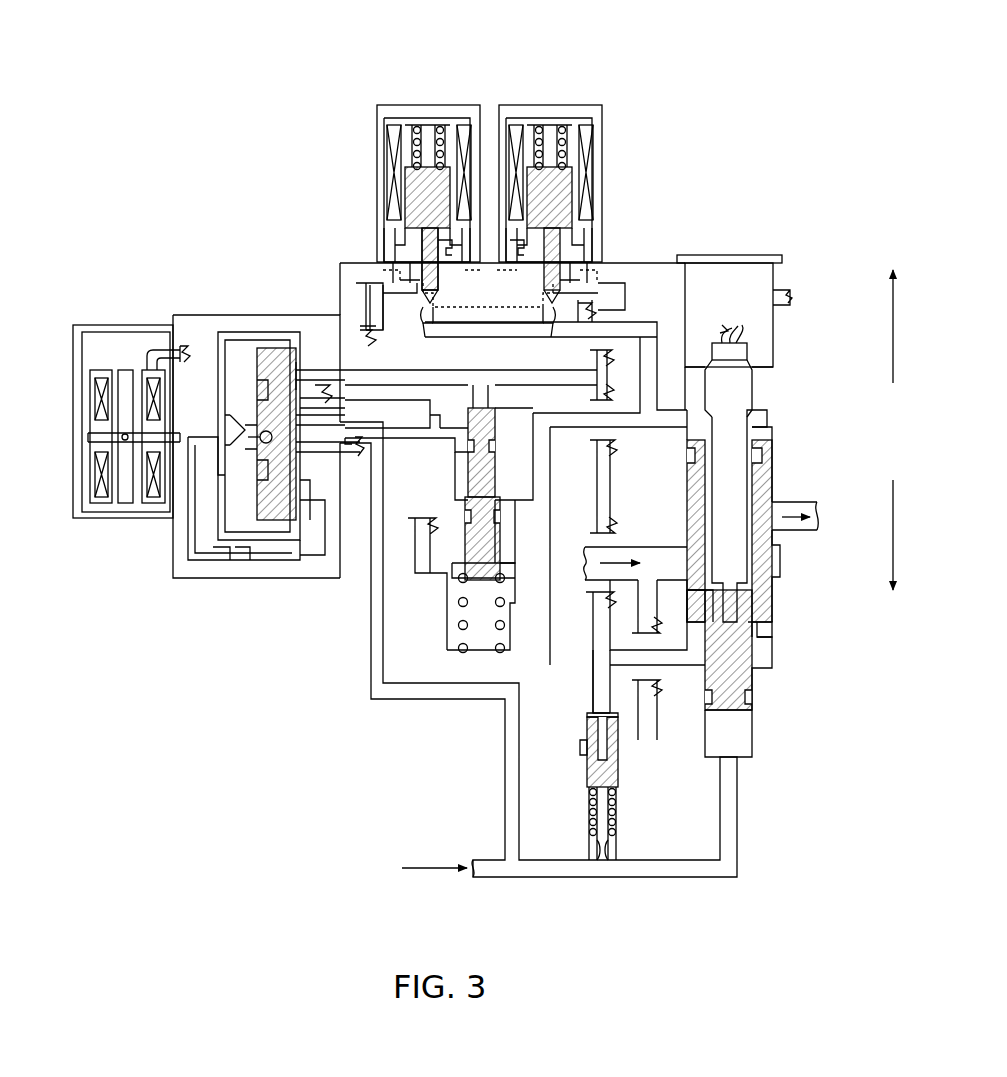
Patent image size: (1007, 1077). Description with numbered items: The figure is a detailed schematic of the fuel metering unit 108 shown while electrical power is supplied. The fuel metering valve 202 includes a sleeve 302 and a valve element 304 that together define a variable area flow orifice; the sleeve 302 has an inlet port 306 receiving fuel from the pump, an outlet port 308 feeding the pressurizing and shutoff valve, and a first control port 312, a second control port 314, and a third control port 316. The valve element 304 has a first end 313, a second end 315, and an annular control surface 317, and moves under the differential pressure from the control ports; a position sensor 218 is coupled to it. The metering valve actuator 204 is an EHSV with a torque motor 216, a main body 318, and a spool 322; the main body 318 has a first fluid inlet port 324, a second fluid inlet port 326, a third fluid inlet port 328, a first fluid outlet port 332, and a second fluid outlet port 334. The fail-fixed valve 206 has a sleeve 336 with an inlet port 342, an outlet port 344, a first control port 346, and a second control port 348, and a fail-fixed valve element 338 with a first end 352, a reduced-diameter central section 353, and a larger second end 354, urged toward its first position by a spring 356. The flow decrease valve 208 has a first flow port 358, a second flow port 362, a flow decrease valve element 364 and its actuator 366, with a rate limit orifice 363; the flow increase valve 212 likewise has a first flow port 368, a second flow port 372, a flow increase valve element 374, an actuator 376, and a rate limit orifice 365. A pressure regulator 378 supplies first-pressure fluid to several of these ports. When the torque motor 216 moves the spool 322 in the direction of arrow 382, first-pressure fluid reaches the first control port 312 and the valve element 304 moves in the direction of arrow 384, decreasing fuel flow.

The fuel metering unit 108 is at (778, 185).
The fuel metering valve 202 is at (795, 410).
The metering valve actuator 204 is at (160, 268).
The fail-fixed valve 206 is at (415, 640).
The flow decrease valve 208 is at (548, 95).
The flow increase valve 212 is at (425, 95).
The torque motor 216 is at (84, 518).
The position sensor 218 is at (742, 318).
The sleeve 302 is at (770, 653).
The valve element 304 is at (772, 487).
The inlet port 306 is at (668, 552).
The outlet port 308 is at (810, 532).
The first control port 312 is at (697, 435).
The first end 313 is at (765, 440).
The second control port 314 is at (700, 668).
The second end 315 is at (740, 716).
The third control port 316 is at (728, 757).
The annular control surface 317 is at (762, 628).
The main body 318 is at (206, 315).
The spool 322 is at (220, 530).
The first fluid inlet port 324 is at (258, 347).
The second fluid inlet port 326 is at (276, 520).
The third fluid inlet port 328 is at (300, 440).
The first fluid outlet port 332 is at (312, 550).
The second fluid outlet port 334 is at (305, 332).
The sleeve 336 is at (497, 560).
The fail-fixed valve element 338 is at (497, 430).
The inlet port 342 is at (460, 458).
The outlet port 344 is at (520, 500).
The first control port 346 is at (497, 392).
The second control port 348 is at (430, 575).
The first end 352 is at (478, 395).
The reduced-diameter central section 353 is at (468, 492).
The second end 354 is at (497, 567).
The spring 356 is at (500, 646).
The first flow port 358 is at (577, 310).
The second flow port 362 is at (580, 310).
The rate limit orifice 363 is at (488, 289).
The flow decrease valve element 364 is at (548, 240).
The rate limit orifice 365 is at (445, 316).
The flow decrease valve actuator 366 is at (600, 136).
The first flow port 368 is at (392, 283).
The second flow port 372 is at (400, 330).
The flow increase valve element 374 is at (425, 242).
The flow increase valve actuator 376 is at (378, 122).
The pressure regulator 378 is at (618, 765).
The direction arrow 382 is at (893, 340).
The direction arrow 384 is at (893, 545).